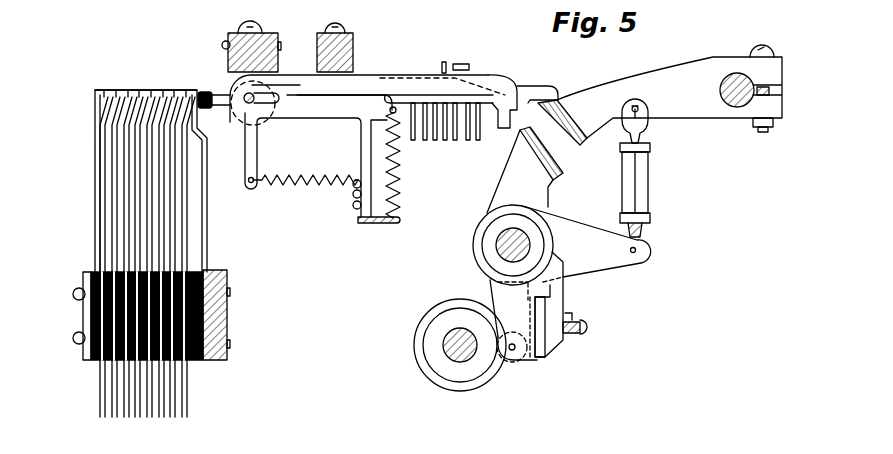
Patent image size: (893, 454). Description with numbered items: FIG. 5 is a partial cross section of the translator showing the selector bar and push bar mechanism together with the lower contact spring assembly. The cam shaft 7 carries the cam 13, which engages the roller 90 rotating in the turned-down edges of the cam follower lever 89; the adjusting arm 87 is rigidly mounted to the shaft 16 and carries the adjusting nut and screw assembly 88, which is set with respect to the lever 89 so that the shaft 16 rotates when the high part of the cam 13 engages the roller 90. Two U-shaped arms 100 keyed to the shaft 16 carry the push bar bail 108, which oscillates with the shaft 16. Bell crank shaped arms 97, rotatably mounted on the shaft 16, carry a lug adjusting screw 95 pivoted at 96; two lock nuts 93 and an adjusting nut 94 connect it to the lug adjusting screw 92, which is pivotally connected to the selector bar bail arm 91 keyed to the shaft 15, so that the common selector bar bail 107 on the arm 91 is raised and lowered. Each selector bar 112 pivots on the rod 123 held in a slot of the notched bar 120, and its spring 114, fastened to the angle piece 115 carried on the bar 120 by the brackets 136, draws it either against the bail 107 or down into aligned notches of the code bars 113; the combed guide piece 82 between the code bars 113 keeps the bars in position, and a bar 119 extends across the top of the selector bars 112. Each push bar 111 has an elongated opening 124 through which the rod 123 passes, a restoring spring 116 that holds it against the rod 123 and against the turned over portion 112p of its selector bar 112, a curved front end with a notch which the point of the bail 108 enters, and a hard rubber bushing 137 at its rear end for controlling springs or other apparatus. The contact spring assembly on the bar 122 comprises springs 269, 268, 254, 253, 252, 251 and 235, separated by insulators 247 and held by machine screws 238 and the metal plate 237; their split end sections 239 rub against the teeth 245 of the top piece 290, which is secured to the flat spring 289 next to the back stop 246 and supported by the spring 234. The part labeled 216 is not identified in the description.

The cam shaft 7 is at (453, 337).
The cam 13 is at (415, 352).
The shaft 15 is at (722, 78).
The shaft 16 is at (497, 243).
The combed guide piece 82 is at (442, 64).
The adjusting arm 87 is at (564, 258).
The adjusting nut and screw assembly 88 is at (570, 320).
The lever 89 is at (543, 355).
The roller 90 is at (507, 361).
The selector bar bail arm 91 is at (660, 72).
The lug adjusting screw 92 is at (648, 110).
The lock nuts 93 is at (650, 146).
The adjusting nut 94 is at (648, 182).
The lug adjusting screw 95 is at (641, 241).
The pivot 96 is at (636, 254).
The bell crank shaped arms 97 is at (772, 50).
The U-shaped arms 100 is at (517, 173).
The common selector bar bail 107 is at (572, 120).
The push bar bail 108 is at (522, 135).
The push bar 111 is at (505, 72).
The selector bar 112 is at (532, 84).
The turned over portion 112p is at (462, 64).
The code bars 113 is at (470, 140).
The spring 114 is at (401, 182).
The angle piece 115 is at (376, 224).
The restoring spring 116 is at (304, 186).
The bar 119 is at (353, 45).
The notched bar 120 is at (260, 34).
The bar 122 is at (227, 302).
The rod 123 is at (245, 112).
The elongated opening 124 is at (262, 96).
The brackets 136 is at (320, 136).
The hard rubber bushing 137 is at (205, 92).
The frame 216 is at (95, 94).
The spring 234 is at (95, 154).
The spring 235 is at (183, 244).
The metal plate 237 is at (88, 272).
The machine screws 238 is at (78, 332).
The split end sections 239 is at (103, 131).
The teeth 245 is at (142, 96).
The back stop 246 is at (207, 201).
The insulators 247 is at (104, 362).
The spring 251 is at (170, 393).
The spring 252 is at (160, 410).
The spring 253 is at (157, 417).
The spring 254 is at (148, 417).
The spring 268 is at (107, 393).
The spring 269 is at (103, 410).
The flat spring 289 is at (194, 223).
The top piece 290 is at (106, 90).